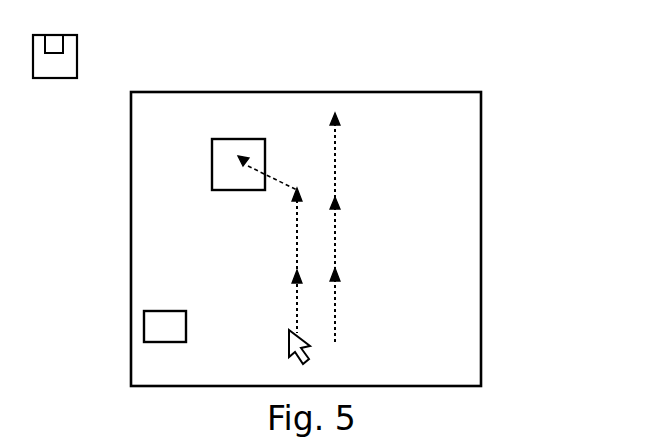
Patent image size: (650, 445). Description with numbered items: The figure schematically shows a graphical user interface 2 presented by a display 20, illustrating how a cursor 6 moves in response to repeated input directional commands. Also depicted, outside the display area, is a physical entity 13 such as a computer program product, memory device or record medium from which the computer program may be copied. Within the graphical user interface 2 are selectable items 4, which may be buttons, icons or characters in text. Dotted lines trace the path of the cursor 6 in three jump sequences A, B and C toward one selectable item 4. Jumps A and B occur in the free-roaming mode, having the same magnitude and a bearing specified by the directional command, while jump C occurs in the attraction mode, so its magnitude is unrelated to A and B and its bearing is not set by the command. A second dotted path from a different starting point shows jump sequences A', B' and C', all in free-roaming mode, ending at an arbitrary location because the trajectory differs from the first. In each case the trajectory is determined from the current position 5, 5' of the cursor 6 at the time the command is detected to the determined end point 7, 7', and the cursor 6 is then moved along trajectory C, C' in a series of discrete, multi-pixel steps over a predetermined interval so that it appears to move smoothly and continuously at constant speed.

The graphical user interface 2 is at (462, 144).
The item 4 is at (212, 165).
The current position 5 is at (286, 243).
The current position 5' is at (364, 233).
The cursor 6 is at (286, 350).
The end point 7 is at (233, 134).
The end point 7' is at (360, 121).
The physical entity 13 is at (77, 58).
The display 20 is at (482, 273).